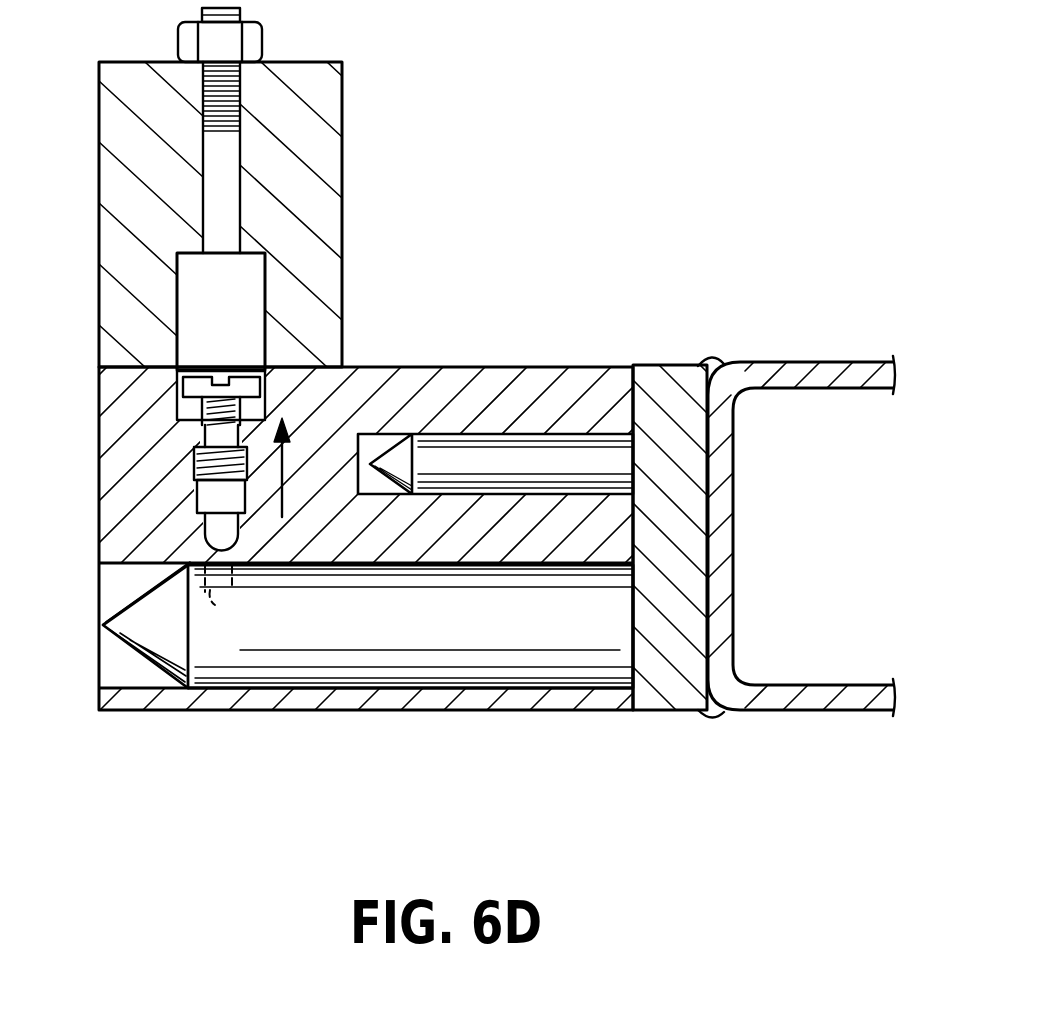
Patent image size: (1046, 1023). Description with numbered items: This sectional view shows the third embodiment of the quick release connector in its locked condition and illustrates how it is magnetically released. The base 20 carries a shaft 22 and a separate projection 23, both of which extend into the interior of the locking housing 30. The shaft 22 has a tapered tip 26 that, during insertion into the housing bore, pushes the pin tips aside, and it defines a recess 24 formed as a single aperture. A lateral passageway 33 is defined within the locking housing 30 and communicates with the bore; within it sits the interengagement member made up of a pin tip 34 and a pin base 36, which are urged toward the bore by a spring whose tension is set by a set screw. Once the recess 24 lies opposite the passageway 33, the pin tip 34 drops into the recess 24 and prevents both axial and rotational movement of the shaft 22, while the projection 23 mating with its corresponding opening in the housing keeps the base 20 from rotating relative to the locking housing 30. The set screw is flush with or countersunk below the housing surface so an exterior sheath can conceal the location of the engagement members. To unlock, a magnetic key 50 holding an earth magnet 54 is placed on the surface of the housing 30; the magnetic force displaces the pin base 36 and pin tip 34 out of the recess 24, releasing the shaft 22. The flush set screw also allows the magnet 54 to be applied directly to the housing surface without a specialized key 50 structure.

The base 20 is at (678, 365).
The shaft 22 is at (545, 632).
The projection 23 is at (478, 456).
The recess 24 is at (215, 605).
The tapered tip 26 is at (132, 647).
The locking housing 30 is at (415, 368).
The lateral passageway 33 is at (245, 543).
The pin tip 34 is at (210, 548).
The pin base 36 is at (205, 493).
The magnetic key 50 is at (343, 187).
The earth magnet 54 is at (265, 275).